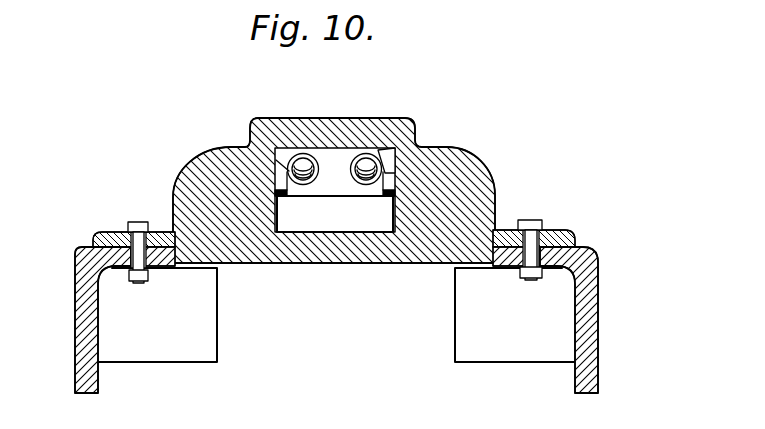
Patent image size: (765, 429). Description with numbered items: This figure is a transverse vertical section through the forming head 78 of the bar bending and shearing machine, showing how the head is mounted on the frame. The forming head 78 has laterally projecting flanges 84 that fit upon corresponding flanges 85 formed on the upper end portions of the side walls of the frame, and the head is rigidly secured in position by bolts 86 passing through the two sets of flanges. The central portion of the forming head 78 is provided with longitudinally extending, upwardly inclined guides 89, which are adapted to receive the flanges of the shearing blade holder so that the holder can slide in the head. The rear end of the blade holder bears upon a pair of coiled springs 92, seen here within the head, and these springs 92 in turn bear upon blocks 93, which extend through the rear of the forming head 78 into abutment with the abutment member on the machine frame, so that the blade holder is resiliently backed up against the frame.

The forming head 78 is at (333, 128).
The laterally projecting flanges 84 is at (113, 231).
The flanges 85 is at (167, 267).
The bolts 86 is at (92, 240).
The guides 89 is at (340, 210).
The coiled springs 92 is at (378, 150).
The blocks 93 is at (335, 171).